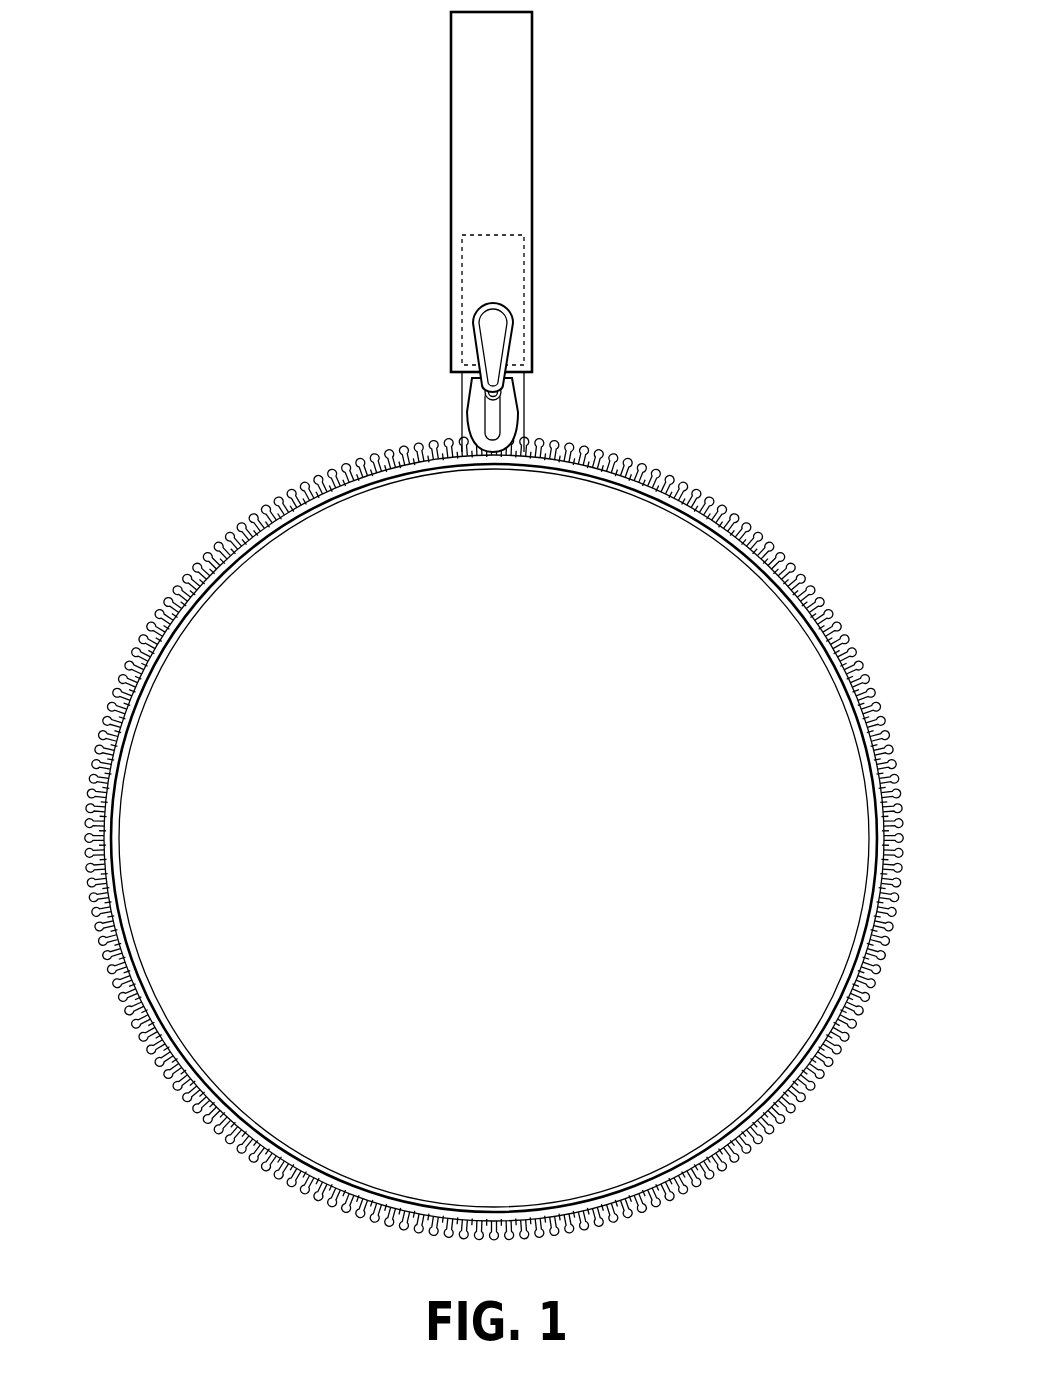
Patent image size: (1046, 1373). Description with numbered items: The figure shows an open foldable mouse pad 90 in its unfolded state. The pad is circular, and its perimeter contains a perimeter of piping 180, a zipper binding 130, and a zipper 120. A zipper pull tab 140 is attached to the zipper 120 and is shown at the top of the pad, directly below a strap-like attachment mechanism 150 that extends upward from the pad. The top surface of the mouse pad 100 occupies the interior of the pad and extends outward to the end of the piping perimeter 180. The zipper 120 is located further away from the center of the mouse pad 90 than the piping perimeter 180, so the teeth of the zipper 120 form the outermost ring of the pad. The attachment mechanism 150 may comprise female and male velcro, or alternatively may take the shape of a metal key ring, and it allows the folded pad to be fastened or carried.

The foldable mouse pad 90 is at (227, 350).
The top surface of the mouse pad 100 is at (522, 853).
The zipper 120 is at (755, 537).
The zipper binding 130 is at (227, 537).
The zipper pull tab 140 is at (490, 358).
The attachment mechanism 150 is at (510, 160).
The piping perimeter 180 is at (855, 660).